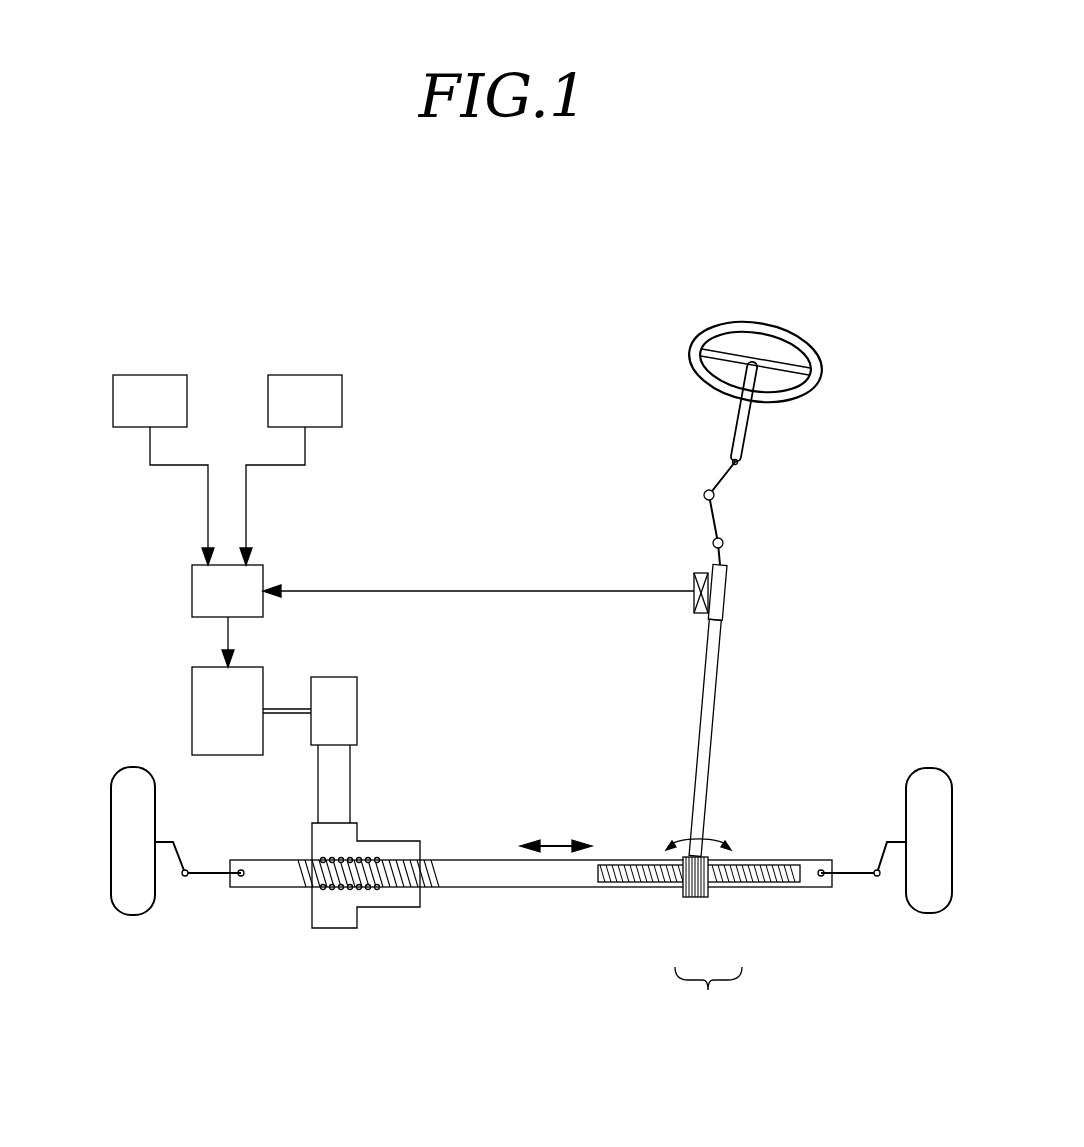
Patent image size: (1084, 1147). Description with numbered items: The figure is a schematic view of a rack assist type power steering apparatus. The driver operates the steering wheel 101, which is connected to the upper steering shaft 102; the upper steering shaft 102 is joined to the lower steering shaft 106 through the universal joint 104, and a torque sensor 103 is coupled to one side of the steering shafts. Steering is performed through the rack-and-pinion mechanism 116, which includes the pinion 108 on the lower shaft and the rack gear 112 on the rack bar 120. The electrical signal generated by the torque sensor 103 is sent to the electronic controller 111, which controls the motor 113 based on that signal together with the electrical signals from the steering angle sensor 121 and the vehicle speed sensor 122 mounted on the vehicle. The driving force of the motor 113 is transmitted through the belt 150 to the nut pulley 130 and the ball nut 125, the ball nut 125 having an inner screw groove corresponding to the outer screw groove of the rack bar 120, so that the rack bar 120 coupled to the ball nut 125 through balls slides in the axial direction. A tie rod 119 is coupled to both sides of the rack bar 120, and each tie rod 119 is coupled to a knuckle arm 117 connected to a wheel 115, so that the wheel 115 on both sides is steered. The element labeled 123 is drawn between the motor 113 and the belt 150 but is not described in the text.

The steering wheel 101 is at (713, 331).
The upper steering shaft 102 is at (745, 425).
The torque sensor 103 is at (697, 577).
The universal joint 104 is at (714, 497).
The lower steering shaft 106 is at (715, 652).
The pinion 108 is at (693, 897).
The electronic controller 111 is at (190, 595).
The rack gear 112 is at (760, 882).
The motor 113 is at (197, 710).
The wheel 115 is at (122, 842).
The rack-and-pinion mechanism 116 is at (708, 992).
The knuckle arm 117 is at (178, 845).
The tie rod 119 is at (208, 875).
The rack bar 120 is at (532, 887).
The steering angle sensor 121 is at (149, 375).
The vehicle speed sensor 122 is at (305, 375).
The reducer 123 is at (343, 707).
The ball nut 125 is at (410, 848).
The nut pulley 130 is at (332, 928).
The belt 150 is at (343, 760).